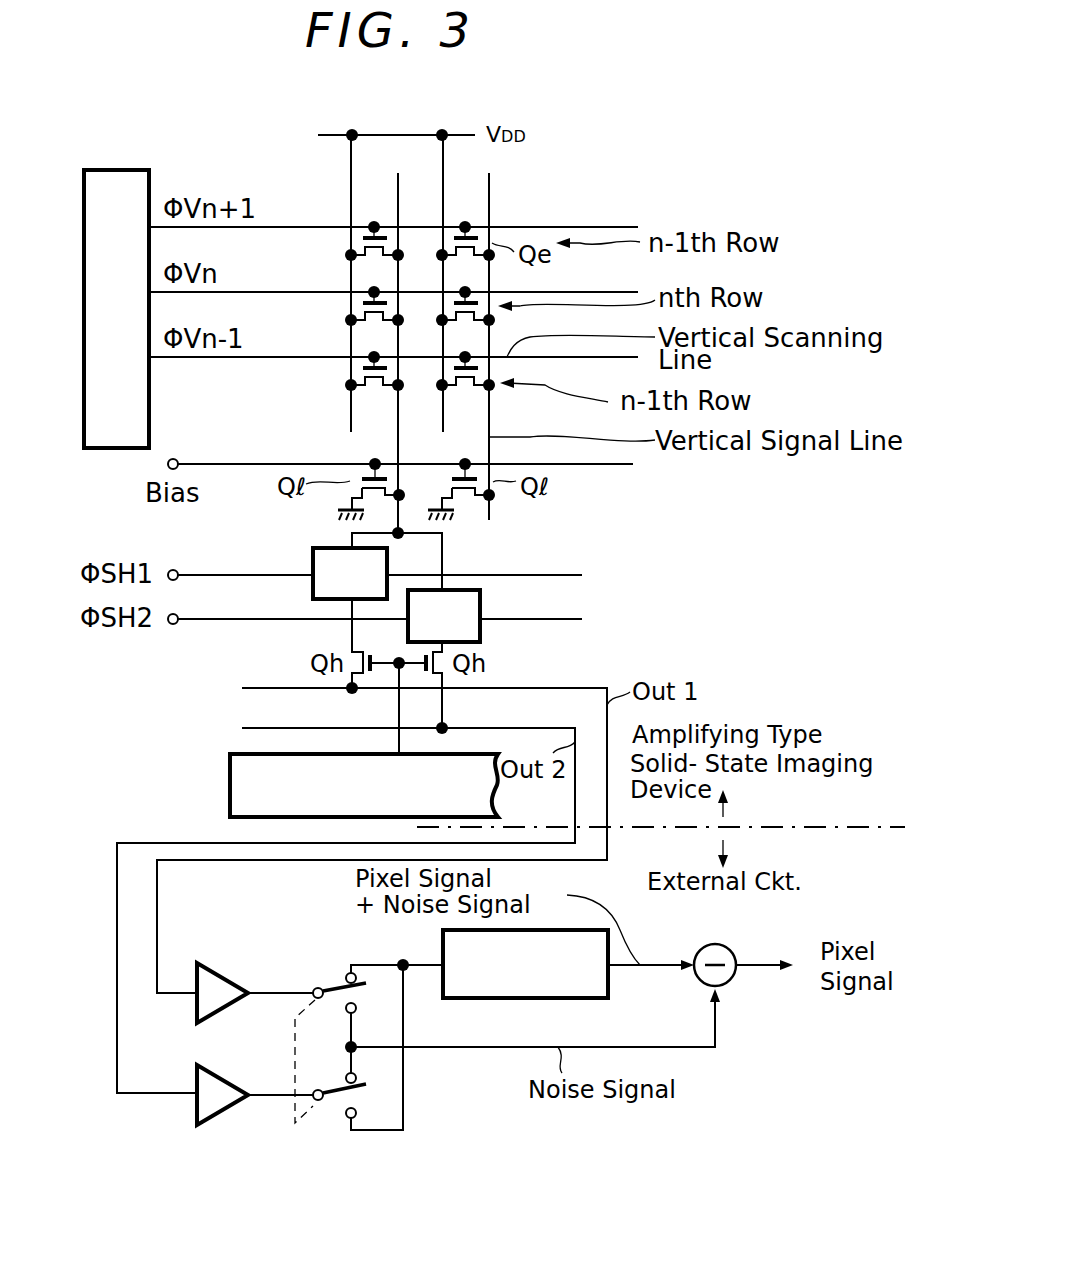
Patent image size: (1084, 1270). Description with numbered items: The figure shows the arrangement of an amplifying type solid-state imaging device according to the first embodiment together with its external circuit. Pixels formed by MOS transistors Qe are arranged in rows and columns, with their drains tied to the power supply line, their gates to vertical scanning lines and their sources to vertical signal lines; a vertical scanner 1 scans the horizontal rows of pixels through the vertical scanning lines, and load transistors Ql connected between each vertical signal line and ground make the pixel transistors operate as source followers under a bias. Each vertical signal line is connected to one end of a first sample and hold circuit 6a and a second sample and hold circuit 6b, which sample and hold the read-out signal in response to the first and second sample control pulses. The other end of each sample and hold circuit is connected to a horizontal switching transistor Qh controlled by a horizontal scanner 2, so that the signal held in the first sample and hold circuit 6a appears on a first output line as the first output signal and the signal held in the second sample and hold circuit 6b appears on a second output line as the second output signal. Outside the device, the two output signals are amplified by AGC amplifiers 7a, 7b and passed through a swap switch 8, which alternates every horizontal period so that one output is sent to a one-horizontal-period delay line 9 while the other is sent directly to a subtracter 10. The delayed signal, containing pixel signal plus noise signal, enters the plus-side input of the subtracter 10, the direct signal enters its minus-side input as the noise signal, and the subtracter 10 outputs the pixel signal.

The vertical scanner 1 is at (116, 170).
The horizontal scanner 2 is at (230, 787).
The first sample and hold circuit 6a is at (316, 548).
The second sample and hold circuit 6b is at (482, 600).
The AGC amplifier 7a is at (222, 975).
The AGC amplifier 7b is at (222, 1117).
The swap switch 8 is at (330, 1118).
The 1H delay line 9 is at (518, 998).
The subtracter 10 is at (730, 950).